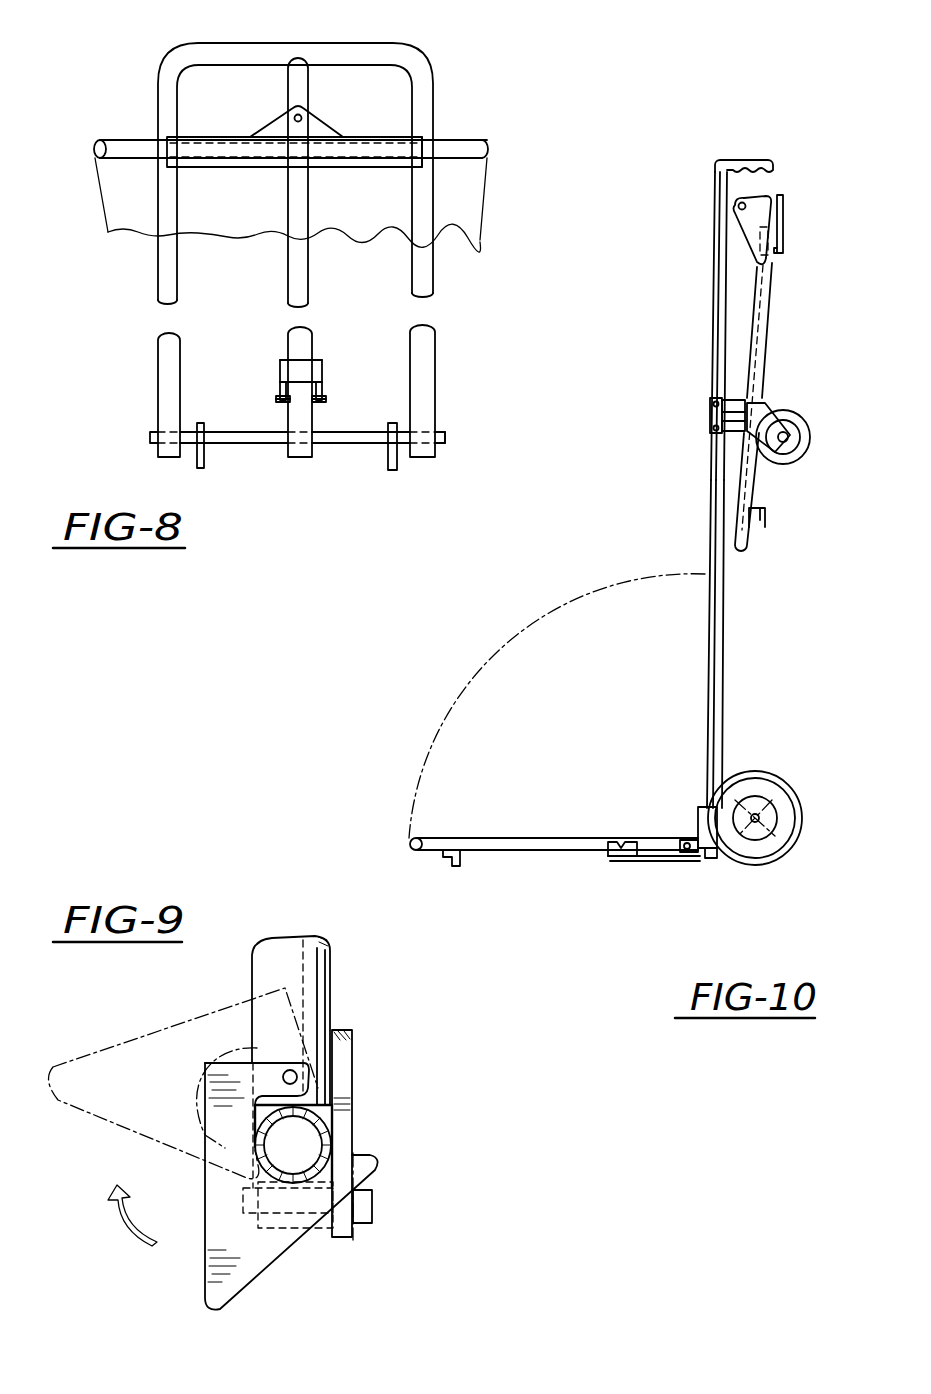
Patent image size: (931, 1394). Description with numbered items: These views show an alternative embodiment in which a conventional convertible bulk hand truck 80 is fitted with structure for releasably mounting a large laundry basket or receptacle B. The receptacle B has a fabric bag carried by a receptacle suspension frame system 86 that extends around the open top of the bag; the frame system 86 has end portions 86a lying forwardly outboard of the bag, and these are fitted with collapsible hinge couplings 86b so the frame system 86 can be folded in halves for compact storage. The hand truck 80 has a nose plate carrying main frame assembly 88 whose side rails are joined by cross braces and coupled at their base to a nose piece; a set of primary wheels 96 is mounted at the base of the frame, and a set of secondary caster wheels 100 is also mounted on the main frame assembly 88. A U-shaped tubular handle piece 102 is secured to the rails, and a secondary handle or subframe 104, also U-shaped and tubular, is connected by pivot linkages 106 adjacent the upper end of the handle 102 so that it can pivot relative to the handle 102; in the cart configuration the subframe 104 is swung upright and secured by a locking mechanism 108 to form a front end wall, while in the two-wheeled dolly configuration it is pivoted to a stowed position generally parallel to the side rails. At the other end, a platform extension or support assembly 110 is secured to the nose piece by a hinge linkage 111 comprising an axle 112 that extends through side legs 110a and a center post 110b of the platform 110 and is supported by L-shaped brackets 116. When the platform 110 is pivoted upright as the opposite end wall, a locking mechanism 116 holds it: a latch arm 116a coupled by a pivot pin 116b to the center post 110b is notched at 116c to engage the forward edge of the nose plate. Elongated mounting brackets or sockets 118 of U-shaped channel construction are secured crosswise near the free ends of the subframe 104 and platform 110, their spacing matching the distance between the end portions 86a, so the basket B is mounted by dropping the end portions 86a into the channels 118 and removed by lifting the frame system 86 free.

In FIG. 10, the convertible bulk hand truck 80 is at (686, 292).
In FIG. 8, the receptacle suspension frame system 86 is at (95, 148).
In FIG. 8, the end portions 86a is at (140, 148).
In FIG. 8, the collapsible hinge couplings 86b is at (330, 130).
In FIG. 10, the main frame assembly 88 is at (730, 661).
In FIG. 10, the primary wheels 96 is at (795, 788).
In FIG. 10, the secondary caster wheels 100 is at (810, 435).
In FIG. 10, the U-shaped tubular handle piece 102 is at (715, 338).
In FIG. 9, the U-shaped tubular handle piece 102 is at (335, 1140).
In FIG. 10, the secondary handle or subframe 104 is at (773, 347).
In FIG. 9, the secondary handle or subframe 104 is at (332, 1003).
In FIG. 10, the pivot linkages 106 is at (775, 193).
In FIG. 9, the pivot linkages 106 is at (360, 1078).
In FIG. 10, the locking mechanism 108 is at (785, 213).
In FIG. 9, the locking mechanism 108 is at (316, 1243).
In FIG. 8, the platform extension or support assembly 110 is at (450, 76).
In FIG. 10, the platform extension or support assembly 110 is at (522, 835).
In FIG. 8, the side legs 110a is at (162, 375).
In FIG. 8, the center post 110b is at (293, 277).
In FIG. 8, the hinge linkage 111 is at (448, 433).
In FIG. 10, the hinge linkage 111 is at (713, 860).
In FIG. 8, the axle 112 is at (368, 437).
In FIG. 8, the L-shaped brackets / locking mechanism 116 is at (205, 462).
In FIG. 10, the L-shaped brackets / locking mechanism 116 is at (613, 857).
In FIG. 8, the latch arm 116a is at (278, 365).
In FIG. 8, the pivot pin 116b is at (278, 397).
In FIG. 8, the notch 116c is at (278, 378).
In FIG. 10, the notch 116c is at (618, 838).
In FIG. 8, the mounting brackets or sockets 118 is at (422, 138).
In FIG. 10, the mounting brackets or sockets 118 is at (770, 518).
In FIG. 8, the laundry basket or receptacle B is at (495, 212).